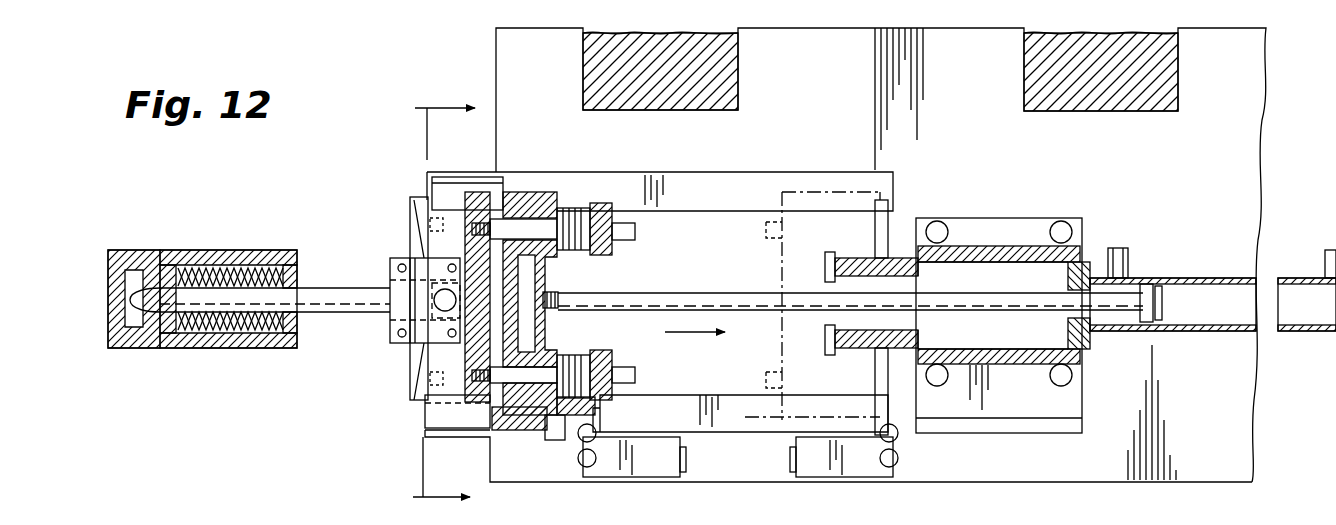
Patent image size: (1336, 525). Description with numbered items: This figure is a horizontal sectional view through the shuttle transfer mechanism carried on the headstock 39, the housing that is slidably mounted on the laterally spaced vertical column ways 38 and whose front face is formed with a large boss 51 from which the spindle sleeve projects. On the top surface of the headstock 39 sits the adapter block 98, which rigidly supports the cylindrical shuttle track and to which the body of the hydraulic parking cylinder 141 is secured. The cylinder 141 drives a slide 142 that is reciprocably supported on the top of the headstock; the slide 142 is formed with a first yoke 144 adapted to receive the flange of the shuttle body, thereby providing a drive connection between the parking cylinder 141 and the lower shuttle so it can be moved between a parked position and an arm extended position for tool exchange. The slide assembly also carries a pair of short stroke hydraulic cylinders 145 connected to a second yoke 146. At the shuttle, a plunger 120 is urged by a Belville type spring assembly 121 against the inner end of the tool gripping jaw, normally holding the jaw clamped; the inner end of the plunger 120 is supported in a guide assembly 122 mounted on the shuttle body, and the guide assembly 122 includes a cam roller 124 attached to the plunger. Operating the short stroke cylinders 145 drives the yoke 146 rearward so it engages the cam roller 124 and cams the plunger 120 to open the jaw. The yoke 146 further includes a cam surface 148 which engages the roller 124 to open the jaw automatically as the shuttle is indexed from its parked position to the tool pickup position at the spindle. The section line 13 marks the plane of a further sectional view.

The section line 13- 13 is at (425, 299).
The column ways 38 is at (592, 93).
The headstock 39 is at (726, 481).
The boss 51 is at (442, 437).
The adapter block 98 is at (992, 250).
The plunger 120 is at (350, 262).
The Belville type spring assembly 121 is at (192, 343).
The guide assembly 122 is at (390, 312).
The cam roller 124 is at (438, 262).
The hydraulic cylinder 141 is at (1184, 331).
The slide 142 is at (556, 331).
The first yoke 144 is at (525, 420).
The short stroke hydraulic cylinders 145 is at (573, 250).
The second yoke 146 is at (430, 410).
The cam surface 148 is at (432, 187).